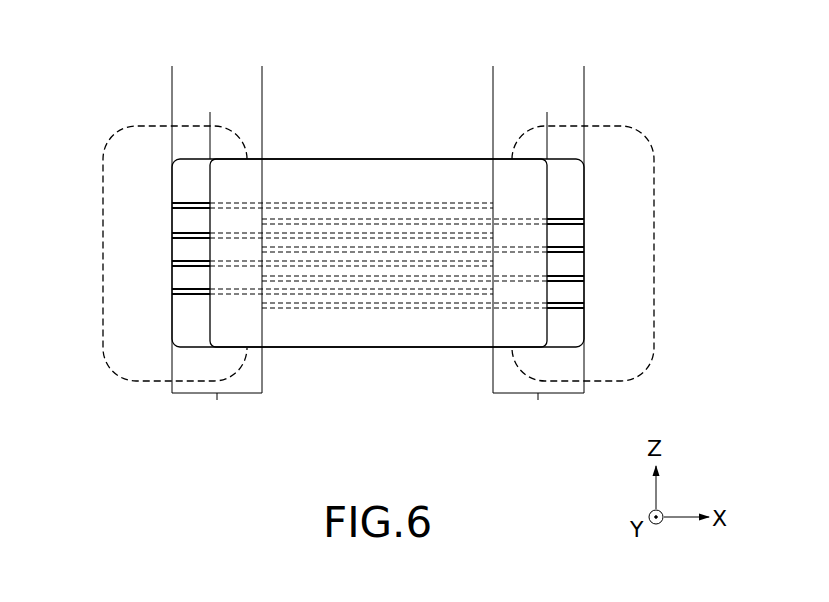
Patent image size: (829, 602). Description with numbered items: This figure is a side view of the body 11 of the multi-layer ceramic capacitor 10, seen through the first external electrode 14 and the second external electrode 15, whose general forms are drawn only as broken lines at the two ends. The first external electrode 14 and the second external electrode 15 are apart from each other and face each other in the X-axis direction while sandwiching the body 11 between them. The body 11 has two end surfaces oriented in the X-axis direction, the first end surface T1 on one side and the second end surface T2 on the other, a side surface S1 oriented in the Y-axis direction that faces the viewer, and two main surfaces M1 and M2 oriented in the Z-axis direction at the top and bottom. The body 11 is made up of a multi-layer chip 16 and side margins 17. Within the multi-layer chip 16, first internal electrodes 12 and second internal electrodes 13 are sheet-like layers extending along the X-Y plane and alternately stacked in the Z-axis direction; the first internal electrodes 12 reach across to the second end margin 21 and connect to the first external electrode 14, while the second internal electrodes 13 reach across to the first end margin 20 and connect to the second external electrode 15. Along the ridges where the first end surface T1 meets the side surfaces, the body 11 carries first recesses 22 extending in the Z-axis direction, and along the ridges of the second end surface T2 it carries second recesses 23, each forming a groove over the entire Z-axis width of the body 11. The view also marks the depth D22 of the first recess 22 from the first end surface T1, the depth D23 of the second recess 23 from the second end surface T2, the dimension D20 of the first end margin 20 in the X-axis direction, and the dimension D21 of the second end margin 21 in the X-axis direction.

The multi-layer ceramic capacitor 10 is at (300, 62).
The body 11 is at (385, 128).
The first internal electrodes 12 is at (172, 203).
The second internal electrodes 13 is at (584, 219).
The first external electrode 14 is at (112, 362).
The second external electrode 15 is at (647, 363).
The multi-layer chip 16 is at (588, 316).
The side margins 17 is at (392, 266).
The first end margin 20 is at (542, 420).
The second end margin 21 is at (220, 420).
The first recesses 22 is at (192, 313).
The second recesses 23 is at (568, 188).
The first end surface T1 is at (172, 190).
The second end surface T2 is at (584, 207).
The main surface M1 is at (331, 159).
The main surface M2 is at (350, 347).
The side surface S1 is at (422, 318).
The dimension of the first end margin D20 is at (584, 72).
The dimension of the second end margin D21 is at (262, 72).
The depth of the first recess D22 is at (210, 117).
The depth of the second recess D23 is at (584, 117).